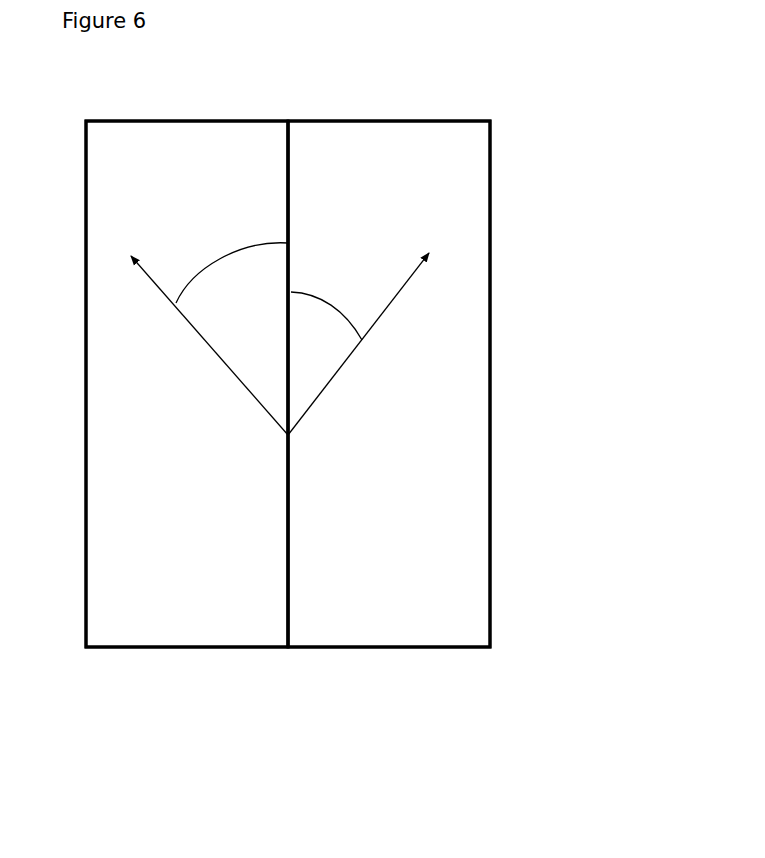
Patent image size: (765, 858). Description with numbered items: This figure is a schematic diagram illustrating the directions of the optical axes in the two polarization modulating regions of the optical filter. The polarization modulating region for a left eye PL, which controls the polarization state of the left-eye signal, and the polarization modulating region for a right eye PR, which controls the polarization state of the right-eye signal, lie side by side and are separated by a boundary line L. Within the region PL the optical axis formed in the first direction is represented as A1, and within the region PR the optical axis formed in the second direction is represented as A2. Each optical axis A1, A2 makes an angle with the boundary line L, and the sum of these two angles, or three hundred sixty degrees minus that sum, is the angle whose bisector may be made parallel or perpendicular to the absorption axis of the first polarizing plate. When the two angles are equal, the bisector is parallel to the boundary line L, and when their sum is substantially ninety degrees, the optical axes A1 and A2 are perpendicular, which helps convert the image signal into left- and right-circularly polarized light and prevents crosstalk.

The boundary line L is at (286, 174).
The polarization modulating region for a left eye PL is at (198, 588).
The polarization modulating region for a right eye PR is at (393, 573).
The optical axis A1 is at (208, 345).
The optical axis A2 is at (408, 283).